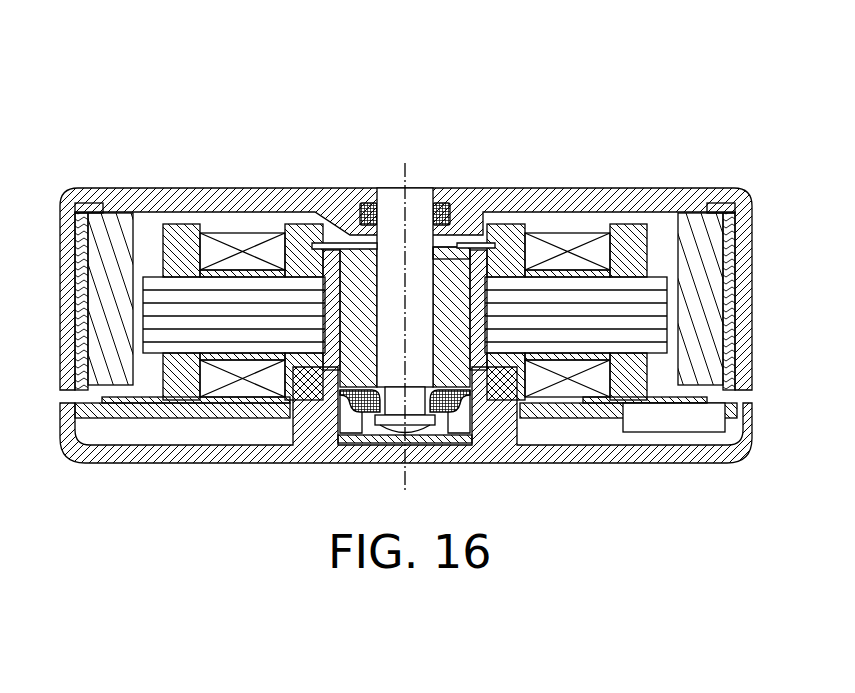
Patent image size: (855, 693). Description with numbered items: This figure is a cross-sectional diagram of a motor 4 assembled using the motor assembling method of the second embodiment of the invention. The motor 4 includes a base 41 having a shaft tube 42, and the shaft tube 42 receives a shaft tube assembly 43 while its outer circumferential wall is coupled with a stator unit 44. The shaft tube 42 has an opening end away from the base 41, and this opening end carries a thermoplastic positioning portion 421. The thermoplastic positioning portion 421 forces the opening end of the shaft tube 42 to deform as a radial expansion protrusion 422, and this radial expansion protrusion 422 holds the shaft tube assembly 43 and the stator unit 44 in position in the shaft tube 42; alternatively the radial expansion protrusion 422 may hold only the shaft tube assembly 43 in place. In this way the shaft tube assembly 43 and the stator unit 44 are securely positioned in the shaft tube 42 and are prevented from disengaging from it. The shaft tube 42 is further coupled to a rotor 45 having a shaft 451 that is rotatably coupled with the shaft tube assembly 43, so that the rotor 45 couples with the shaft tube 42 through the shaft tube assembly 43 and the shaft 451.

The motor 4 is at (600, 75).
The base 41 is at (560, 457).
The shaft tube 42 is at (483, 294).
The thermoplastic positioning portion 421 is at (473, 252).
The radial expansion protrusion 422 is at (487, 236).
The shaft tube assembly 43 is at (352, 228).
The stator unit 44 is at (592, 227).
The rotor 45 is at (677, 188).
The shaft 451 is at (405, 182).